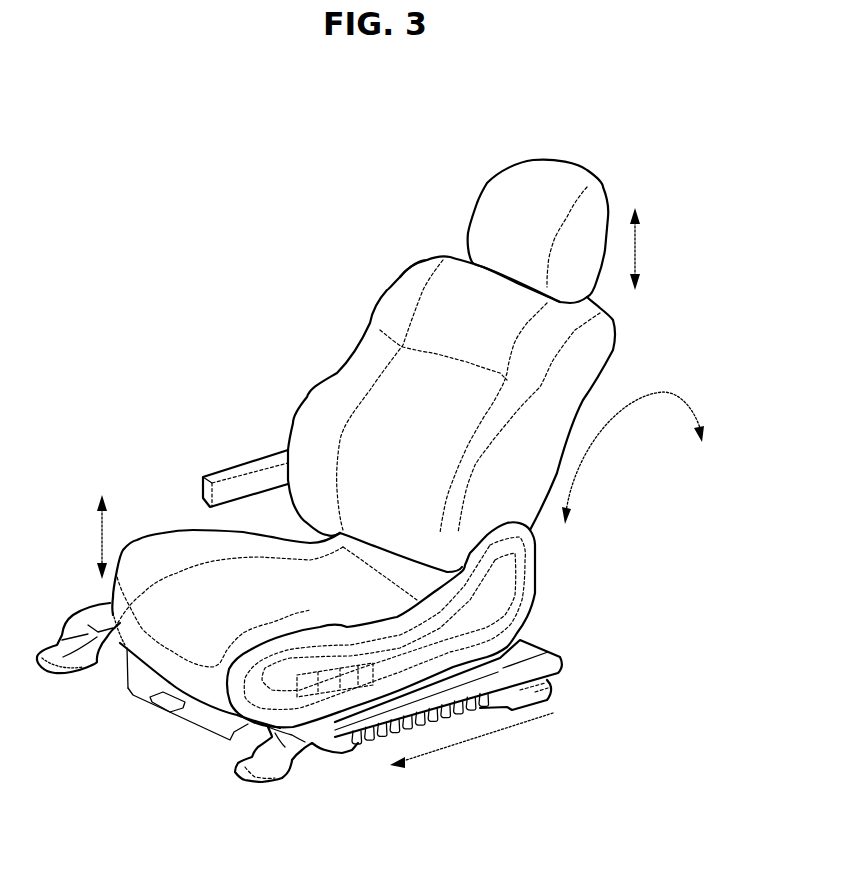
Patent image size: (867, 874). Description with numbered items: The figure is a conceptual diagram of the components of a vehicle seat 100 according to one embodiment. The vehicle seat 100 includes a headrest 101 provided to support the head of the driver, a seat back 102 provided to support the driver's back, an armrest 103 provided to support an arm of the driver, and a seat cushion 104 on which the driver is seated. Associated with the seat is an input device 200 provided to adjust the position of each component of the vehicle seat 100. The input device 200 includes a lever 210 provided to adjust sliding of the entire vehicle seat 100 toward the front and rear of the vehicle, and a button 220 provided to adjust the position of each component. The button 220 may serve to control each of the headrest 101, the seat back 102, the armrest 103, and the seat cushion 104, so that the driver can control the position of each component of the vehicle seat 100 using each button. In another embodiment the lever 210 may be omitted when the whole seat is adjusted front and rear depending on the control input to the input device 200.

The vehicle seat 100 is at (205, 161).
The headrest 101 is at (488, 213).
The seat back 102 is at (340, 385).
The armrest 103 is at (237, 477).
The seat cushion 104 is at (170, 547).
The input device 200 is at (299, 734).
The lever 210 is at (153, 713).
The button 220 is at (352, 742).